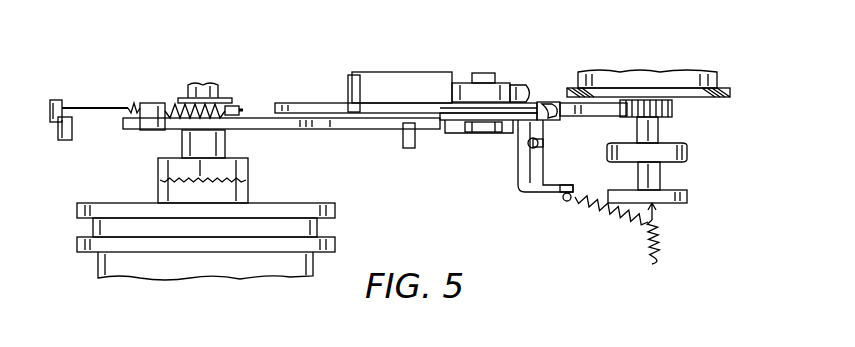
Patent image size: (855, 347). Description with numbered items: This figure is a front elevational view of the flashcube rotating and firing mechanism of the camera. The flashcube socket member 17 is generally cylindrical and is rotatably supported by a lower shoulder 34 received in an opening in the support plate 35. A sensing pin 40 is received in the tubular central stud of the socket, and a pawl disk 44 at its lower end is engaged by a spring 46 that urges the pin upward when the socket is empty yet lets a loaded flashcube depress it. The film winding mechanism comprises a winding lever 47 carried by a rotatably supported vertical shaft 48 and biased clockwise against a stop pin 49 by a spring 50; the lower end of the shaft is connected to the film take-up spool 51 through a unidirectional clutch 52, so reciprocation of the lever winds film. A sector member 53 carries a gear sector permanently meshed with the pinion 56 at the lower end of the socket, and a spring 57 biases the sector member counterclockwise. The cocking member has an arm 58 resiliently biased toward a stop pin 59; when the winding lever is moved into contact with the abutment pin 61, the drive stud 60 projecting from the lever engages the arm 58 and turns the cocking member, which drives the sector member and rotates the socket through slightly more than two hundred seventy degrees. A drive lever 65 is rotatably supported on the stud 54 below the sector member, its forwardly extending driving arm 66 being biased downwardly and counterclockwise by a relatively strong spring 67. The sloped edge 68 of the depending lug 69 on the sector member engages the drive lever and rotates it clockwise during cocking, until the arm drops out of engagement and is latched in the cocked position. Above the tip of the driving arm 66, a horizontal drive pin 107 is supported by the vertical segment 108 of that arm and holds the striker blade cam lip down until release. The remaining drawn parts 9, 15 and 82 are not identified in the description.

The tension spring 9 is at (660, 235).
The motor 15 is at (392, 72).
The flashcube socket member 17 is at (718, 78).
The lower shoulder 34 is at (637, 95).
The support plate 35 is at (730, 93).
The sensing pin 40 is at (660, 135).
The pawl disk 44 is at (690, 196).
The spring 46 is at (660, 256).
The winding lever 47 is at (351, 129).
The vertical shaft 48 is at (205, 83).
The stop pin 49 is at (405, 145).
The spring 50 is at (128, 106).
The film take-up spool 51 is at (93, 228).
The unidirectional clutch 52 is at (248, 186).
The sector member 53 is at (491, 110).
The stud 54 is at (482, 73).
The pinion 56 is at (672, 108).
The spring 57 is at (530, 88).
The arm 58 is at (284, 103).
The stop pin 59 is at (348, 90).
The drive stud 60 is at (158, 103).
The abutment pin 61 is at (73, 126).
The drive lever 65 is at (483, 133).
The driving arm 66 is at (545, 194).
The spring 67 is at (600, 212).
The sloped edge 68 is at (555, 103).
The depending lug 69 is at (555, 118).
The upper flange 82 is at (690, 156).
The horizontal drive pin 107 is at (545, 143).
The vertical segment 108 is at (527, 163).